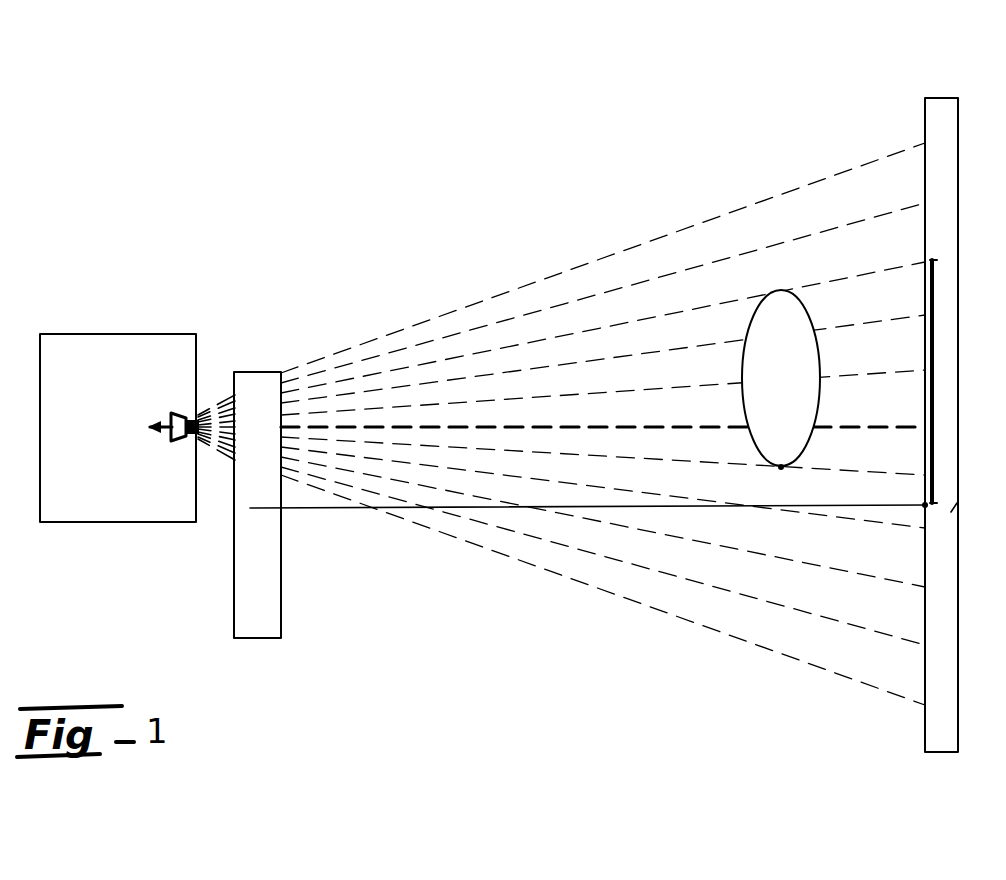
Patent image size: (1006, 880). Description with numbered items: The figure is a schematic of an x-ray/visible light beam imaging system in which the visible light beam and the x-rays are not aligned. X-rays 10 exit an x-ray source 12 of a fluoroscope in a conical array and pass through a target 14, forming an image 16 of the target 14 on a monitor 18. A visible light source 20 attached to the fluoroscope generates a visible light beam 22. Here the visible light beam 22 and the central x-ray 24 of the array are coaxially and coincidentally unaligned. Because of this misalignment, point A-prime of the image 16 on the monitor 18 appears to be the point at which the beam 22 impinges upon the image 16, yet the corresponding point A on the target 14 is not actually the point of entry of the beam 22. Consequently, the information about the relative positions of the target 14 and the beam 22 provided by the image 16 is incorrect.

The x-rays 10 is at (728, 210).
The x-ray source 12 is at (127, 333).
The target 14 is at (805, 296).
The image 16 is at (937, 282).
The monitor 18 is at (941, 96).
The visible light source 20 is at (259, 372).
The visible light beam 22 is at (254, 508).
The central x-ray 24 is at (714, 422).